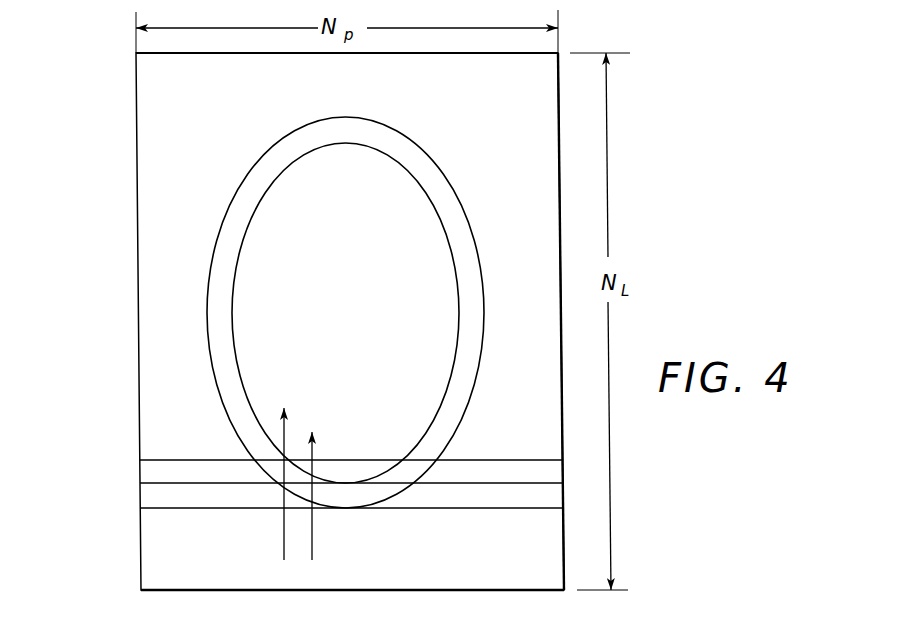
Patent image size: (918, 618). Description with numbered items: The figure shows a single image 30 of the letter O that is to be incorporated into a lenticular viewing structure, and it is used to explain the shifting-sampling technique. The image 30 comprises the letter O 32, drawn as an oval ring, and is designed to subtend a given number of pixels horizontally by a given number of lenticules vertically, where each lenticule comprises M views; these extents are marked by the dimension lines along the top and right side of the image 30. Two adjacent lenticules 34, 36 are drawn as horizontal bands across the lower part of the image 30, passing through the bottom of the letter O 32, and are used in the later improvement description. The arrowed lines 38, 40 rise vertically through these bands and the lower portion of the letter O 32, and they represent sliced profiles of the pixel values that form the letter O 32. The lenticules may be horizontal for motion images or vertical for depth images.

The image 30 is at (110, 218).
The letter O 32 is at (231, 204).
The lenticule 34 is at (565, 493).
The lenticule 36 is at (566, 470).
The arrowed line 38 is at (313, 533).
The arrowed line 40 is at (283, 537).